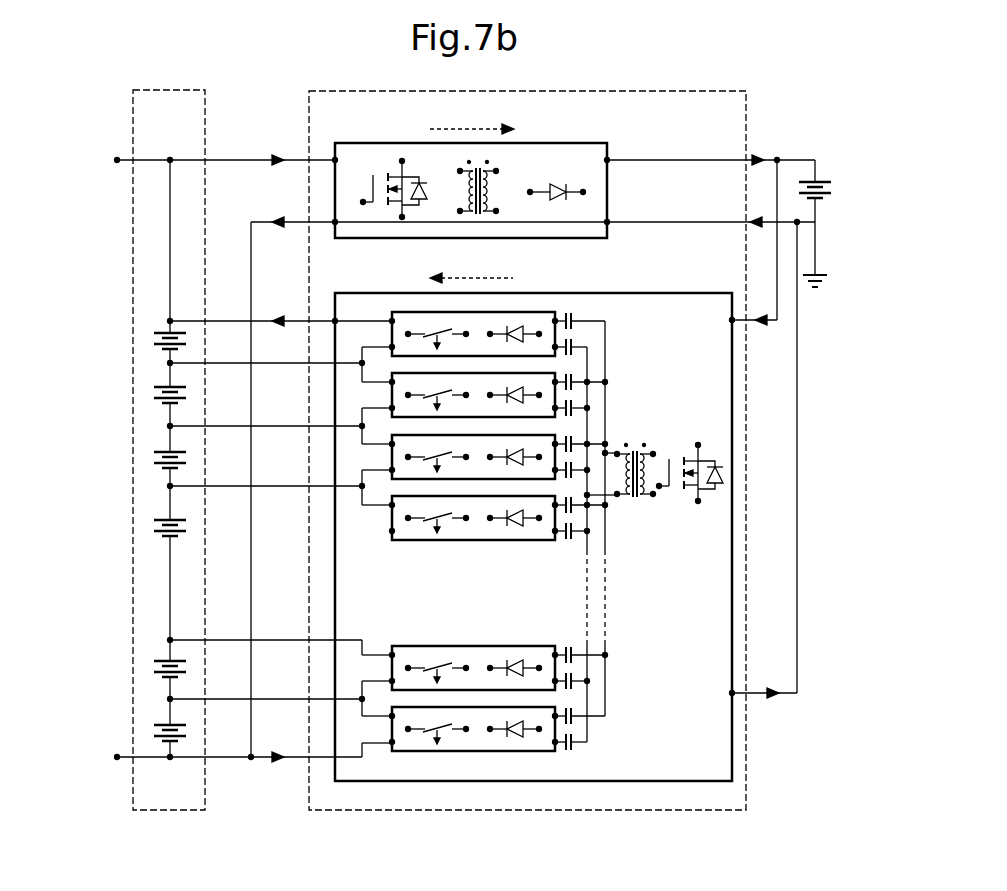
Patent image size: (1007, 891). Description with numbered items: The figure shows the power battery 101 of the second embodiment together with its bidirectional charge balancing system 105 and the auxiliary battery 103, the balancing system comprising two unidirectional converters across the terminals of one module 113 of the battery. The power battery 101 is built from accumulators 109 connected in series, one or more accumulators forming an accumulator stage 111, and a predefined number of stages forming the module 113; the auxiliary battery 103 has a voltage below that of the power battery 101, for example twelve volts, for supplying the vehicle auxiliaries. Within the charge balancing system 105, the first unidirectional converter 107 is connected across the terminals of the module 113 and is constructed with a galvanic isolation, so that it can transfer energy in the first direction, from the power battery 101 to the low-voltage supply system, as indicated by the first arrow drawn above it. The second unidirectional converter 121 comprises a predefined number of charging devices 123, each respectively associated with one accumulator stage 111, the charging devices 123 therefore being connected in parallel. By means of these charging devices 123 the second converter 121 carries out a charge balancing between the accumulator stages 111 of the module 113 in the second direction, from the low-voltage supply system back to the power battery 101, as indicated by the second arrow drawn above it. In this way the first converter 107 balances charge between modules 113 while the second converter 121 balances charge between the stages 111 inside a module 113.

The power battery 101 is at (166, 73).
The auxiliary battery 103 is at (815, 150).
The bidirectional charge balancing system 105 is at (583, 91).
The first unidirectional converter 107 is at (567, 142).
The accumulator 109 is at (157, 733).
The accumulator stage 111 is at (129, 340).
The module 113 is at (107, 411).
The second unidirectional converter 121 is at (532, 292).
The charging device 123 is at (410, 312).